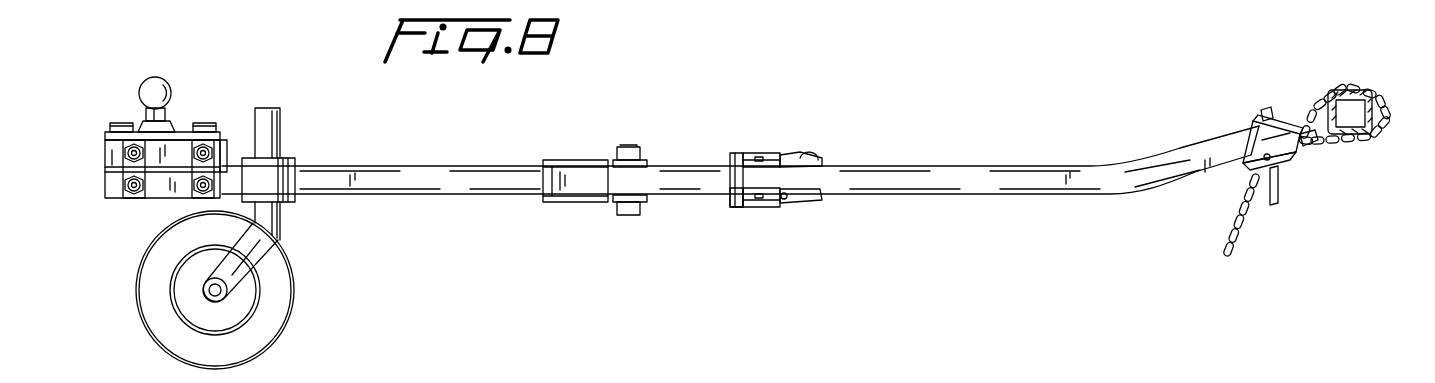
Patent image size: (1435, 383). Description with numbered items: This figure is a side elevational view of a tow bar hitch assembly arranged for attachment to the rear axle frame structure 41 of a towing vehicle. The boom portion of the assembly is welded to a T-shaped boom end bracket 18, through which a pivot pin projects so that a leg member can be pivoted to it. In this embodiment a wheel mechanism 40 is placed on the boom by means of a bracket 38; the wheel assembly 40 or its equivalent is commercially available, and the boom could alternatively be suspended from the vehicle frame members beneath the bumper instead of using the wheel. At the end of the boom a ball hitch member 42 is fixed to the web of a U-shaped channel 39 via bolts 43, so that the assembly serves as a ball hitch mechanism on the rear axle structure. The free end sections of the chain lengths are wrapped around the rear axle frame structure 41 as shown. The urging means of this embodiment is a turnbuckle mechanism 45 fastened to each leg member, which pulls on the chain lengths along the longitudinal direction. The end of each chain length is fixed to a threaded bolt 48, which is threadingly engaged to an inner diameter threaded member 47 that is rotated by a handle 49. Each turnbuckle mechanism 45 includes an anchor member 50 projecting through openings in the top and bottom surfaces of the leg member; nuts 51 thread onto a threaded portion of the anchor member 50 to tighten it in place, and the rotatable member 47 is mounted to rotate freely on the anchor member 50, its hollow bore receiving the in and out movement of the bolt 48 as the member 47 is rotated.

The T-shaped boom end bracket 18 is at (578, 205).
The bracket 38 is at (296, 167).
The U-shaped channel 39 is at (113, 152).
The wheel mechanism 40 is at (286, 296).
The rear axle frame structure 41 is at (1333, 117).
The ball hitch member 42 is at (157, 95).
The bolts 43 is at (207, 125).
The turnbuckle mechanism 45 is at (795, 143).
The inner diameter threaded member 47 is at (770, 204).
The threaded bolt 48 is at (788, 198).
The handle 49 is at (760, 156).
The anchor member 50 is at (730, 163).
The nuts 51 is at (731, 196).